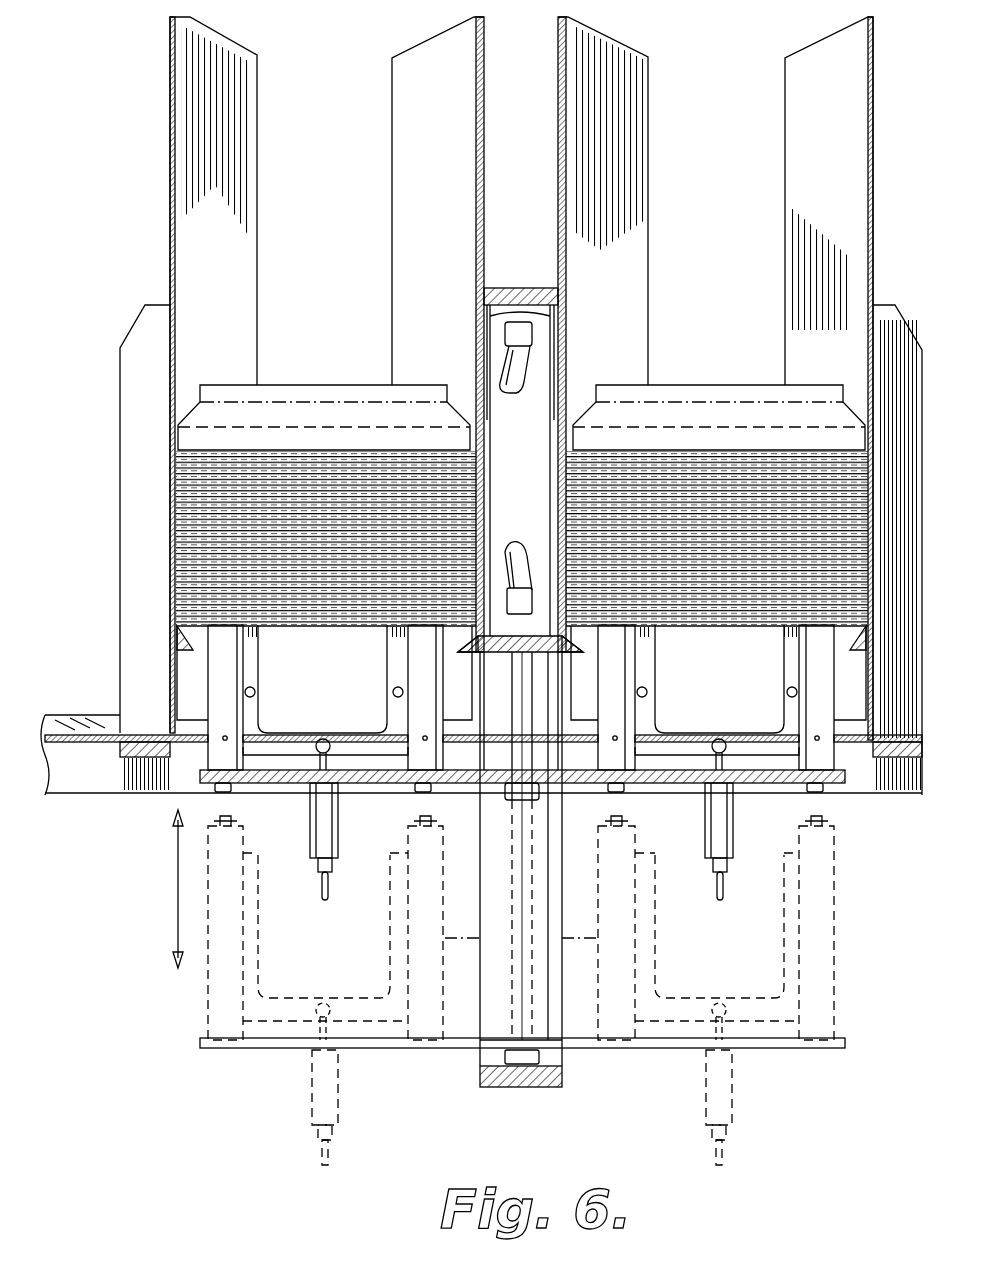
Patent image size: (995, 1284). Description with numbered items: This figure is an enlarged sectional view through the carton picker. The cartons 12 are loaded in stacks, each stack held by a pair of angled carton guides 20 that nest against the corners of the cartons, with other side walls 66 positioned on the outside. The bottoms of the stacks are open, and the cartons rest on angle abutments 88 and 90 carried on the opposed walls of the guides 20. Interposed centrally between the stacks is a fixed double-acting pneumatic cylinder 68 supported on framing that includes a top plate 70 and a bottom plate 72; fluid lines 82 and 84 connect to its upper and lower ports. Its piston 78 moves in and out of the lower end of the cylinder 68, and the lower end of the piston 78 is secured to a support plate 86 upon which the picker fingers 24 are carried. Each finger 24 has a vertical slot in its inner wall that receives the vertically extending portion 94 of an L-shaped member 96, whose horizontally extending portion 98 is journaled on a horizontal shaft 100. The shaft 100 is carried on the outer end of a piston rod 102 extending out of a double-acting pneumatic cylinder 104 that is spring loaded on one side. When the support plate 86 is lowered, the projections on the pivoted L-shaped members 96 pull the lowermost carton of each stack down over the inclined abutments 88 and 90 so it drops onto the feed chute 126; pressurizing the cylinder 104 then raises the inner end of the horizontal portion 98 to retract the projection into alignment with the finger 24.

The cartons 12 is at (328, 385).
The angled carton guides 20 is at (246, 282).
The picker fingers 24 is at (226, 661).
The side walls 66 is at (125, 380).
The pneumatic cylinder 68 is at (528, 407).
The top plate 70 is at (487, 290).
The bottom plate 72 is at (503, 655).
The piston 78 is at (517, 717).
The fluid line 82 is at (527, 352).
The fluid line 84 is at (512, 572).
The support plate 86 is at (845, 784).
The angle abutment 88 is at (185, 646).
The angle abutment 90 is at (463, 640).
The vertically extending portion 94 is at (648, 910).
The L-shaped member 96 is at (280, 975).
The horizontally extending portion 98 is at (678, 1001).
The shaft 100 is at (326, 738).
The piston rod 102 is at (738, 707).
The pneumatic cylinder 104 is at (312, 816).
The feed chute 126 is at (56, 750).